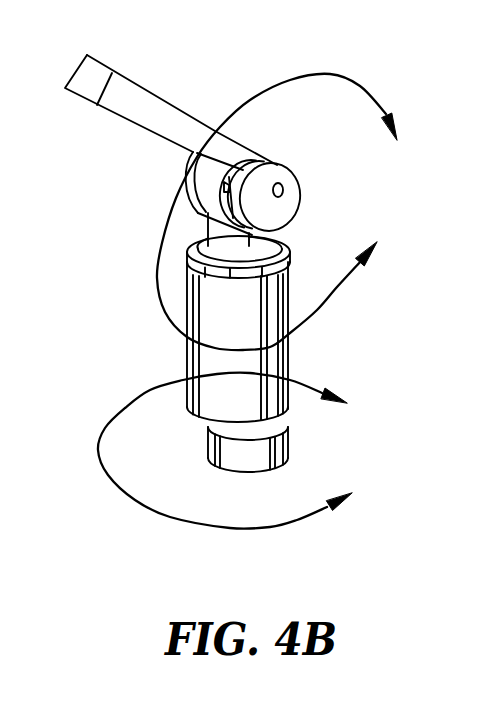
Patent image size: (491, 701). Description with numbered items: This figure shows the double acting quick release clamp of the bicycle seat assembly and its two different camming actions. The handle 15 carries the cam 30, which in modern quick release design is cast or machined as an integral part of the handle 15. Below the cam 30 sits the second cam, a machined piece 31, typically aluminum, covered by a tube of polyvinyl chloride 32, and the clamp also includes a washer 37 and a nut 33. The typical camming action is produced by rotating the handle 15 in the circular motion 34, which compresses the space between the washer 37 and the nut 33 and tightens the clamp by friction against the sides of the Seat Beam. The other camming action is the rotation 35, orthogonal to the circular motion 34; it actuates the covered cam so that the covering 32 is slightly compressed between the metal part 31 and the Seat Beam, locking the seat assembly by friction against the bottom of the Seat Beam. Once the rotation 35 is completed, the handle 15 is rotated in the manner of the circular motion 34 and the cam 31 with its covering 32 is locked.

The handle 15 is at (132, 102).
The cam 30 is at (300, 188).
The machined piece 31 is at (200, 250).
The tube of polyvinyl chloride 32 is at (288, 354).
The nut 33 is at (210, 450).
The circular motion 34 is at (340, 74).
The rotation 35 is at (272, 528).
The washer 37 is at (210, 222).